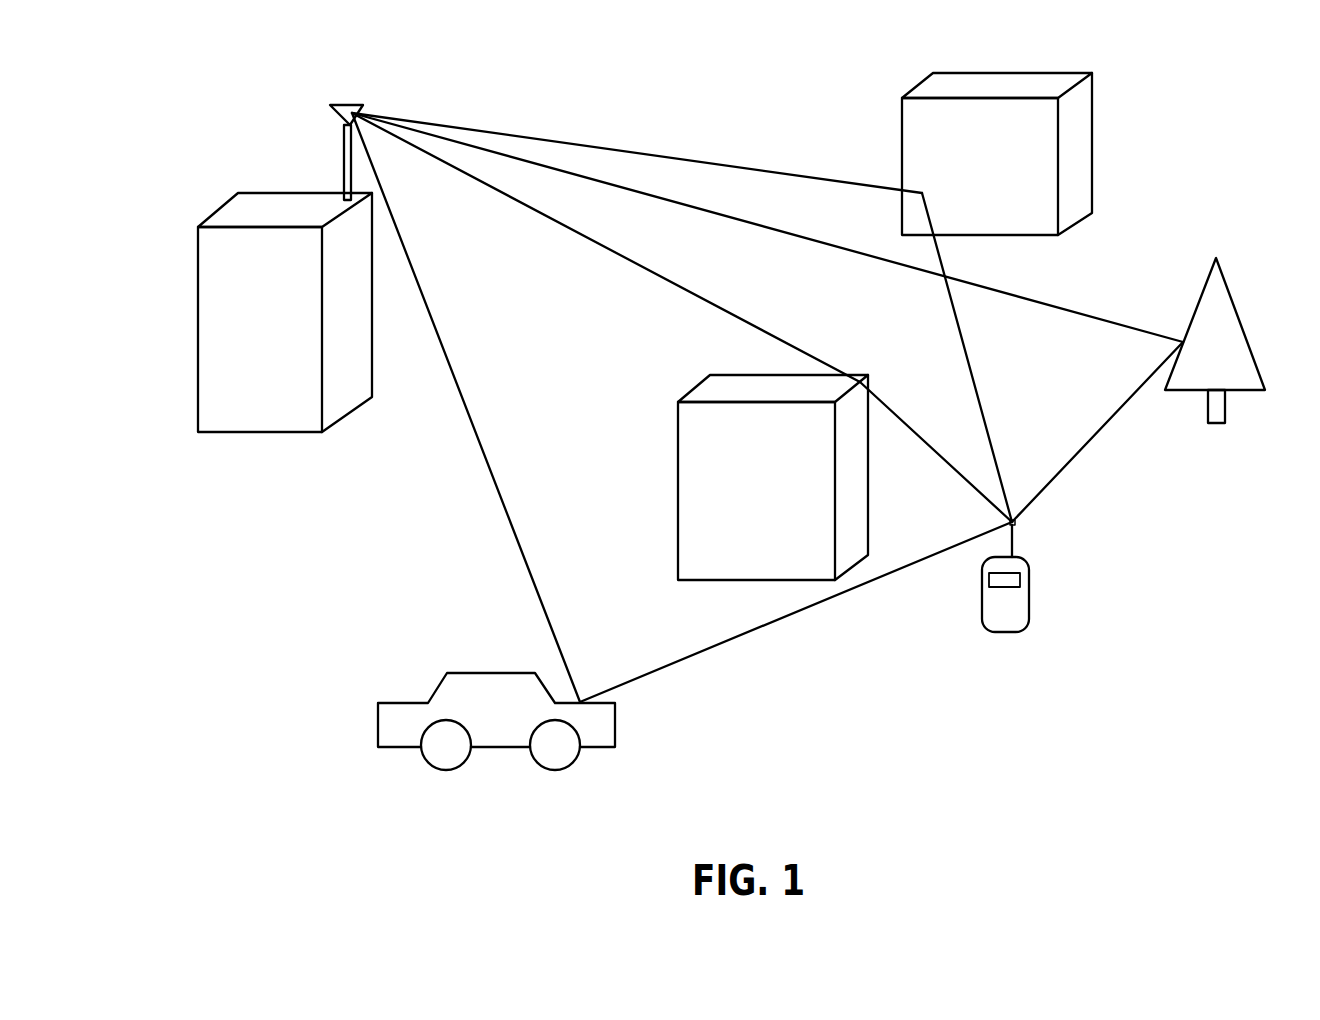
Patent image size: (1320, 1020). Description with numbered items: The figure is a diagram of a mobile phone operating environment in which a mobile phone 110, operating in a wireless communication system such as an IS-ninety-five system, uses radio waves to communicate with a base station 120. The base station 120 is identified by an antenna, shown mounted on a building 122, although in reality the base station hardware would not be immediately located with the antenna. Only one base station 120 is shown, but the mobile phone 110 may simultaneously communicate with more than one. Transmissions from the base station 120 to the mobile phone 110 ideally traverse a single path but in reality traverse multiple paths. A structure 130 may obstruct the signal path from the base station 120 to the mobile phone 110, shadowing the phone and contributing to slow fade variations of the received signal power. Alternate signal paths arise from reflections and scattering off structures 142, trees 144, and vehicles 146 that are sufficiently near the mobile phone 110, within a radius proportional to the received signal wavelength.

The mobile phone 110 is at (1013, 643).
The base station 120 is at (325, 119).
The building 122 is at (285, 312).
The structure 130 is at (773, 477).
The structures 142 is at (997, 154).
The trees 144 is at (1215, 340).
The vehicles 146 is at (496, 721).